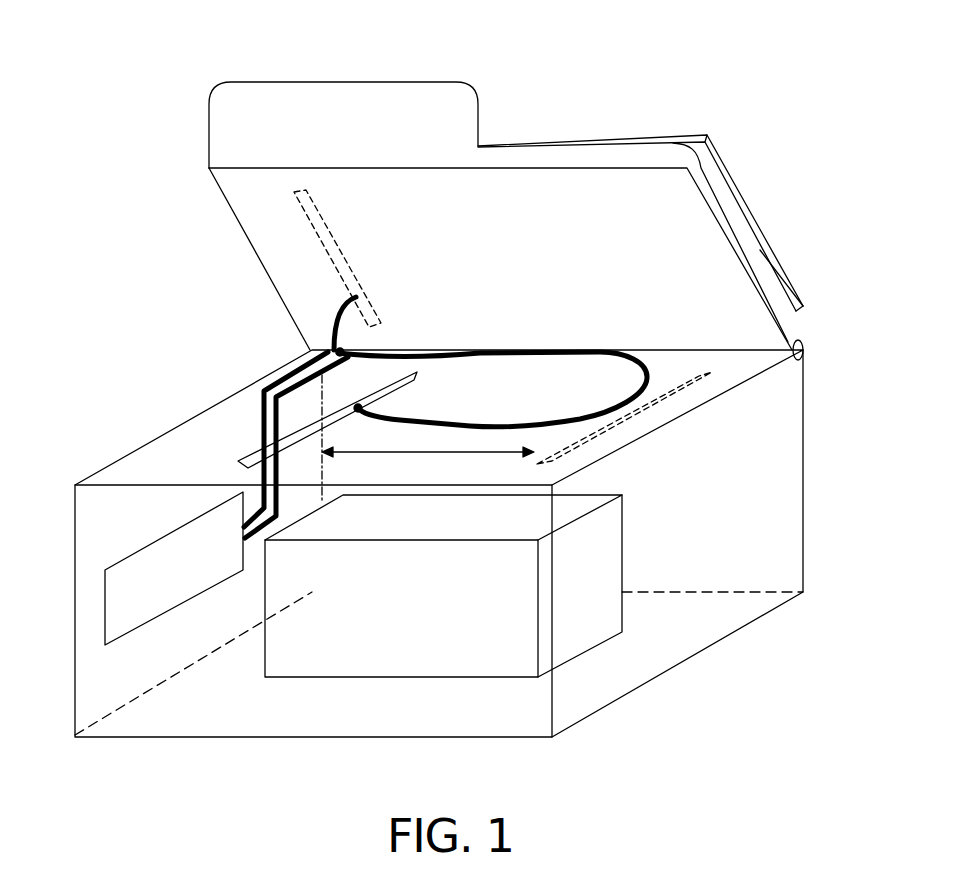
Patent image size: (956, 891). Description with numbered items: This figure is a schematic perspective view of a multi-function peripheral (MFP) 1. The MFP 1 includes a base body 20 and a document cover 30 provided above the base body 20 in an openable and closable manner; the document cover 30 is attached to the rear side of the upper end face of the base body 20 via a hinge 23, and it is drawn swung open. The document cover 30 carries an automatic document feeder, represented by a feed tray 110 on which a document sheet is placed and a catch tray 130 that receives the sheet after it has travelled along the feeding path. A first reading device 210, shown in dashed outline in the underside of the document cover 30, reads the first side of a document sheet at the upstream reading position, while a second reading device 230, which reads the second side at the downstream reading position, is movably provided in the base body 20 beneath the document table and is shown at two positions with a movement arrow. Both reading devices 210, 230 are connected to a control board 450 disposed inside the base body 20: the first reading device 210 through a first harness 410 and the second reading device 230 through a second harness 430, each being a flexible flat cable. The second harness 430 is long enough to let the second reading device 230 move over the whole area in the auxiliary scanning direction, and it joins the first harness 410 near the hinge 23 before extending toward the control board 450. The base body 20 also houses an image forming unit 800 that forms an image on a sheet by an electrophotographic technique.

The multi-function peripheral 1 is at (781, 91).
The base body 20 is at (778, 483).
The hinge 23 is at (807, 349).
The document cover 30 is at (417, 88).
The feed tray 110 is at (642, 137).
The catch tray 130 is at (782, 300).
The first reading device 210 is at (342, 250).
The second reading device 230 is at (250, 459).
The first harness 410 is at (330, 327).
The second harness 430 is at (480, 338).
The control board 450 is at (167, 533).
The image forming unit 800 is at (613, 557).